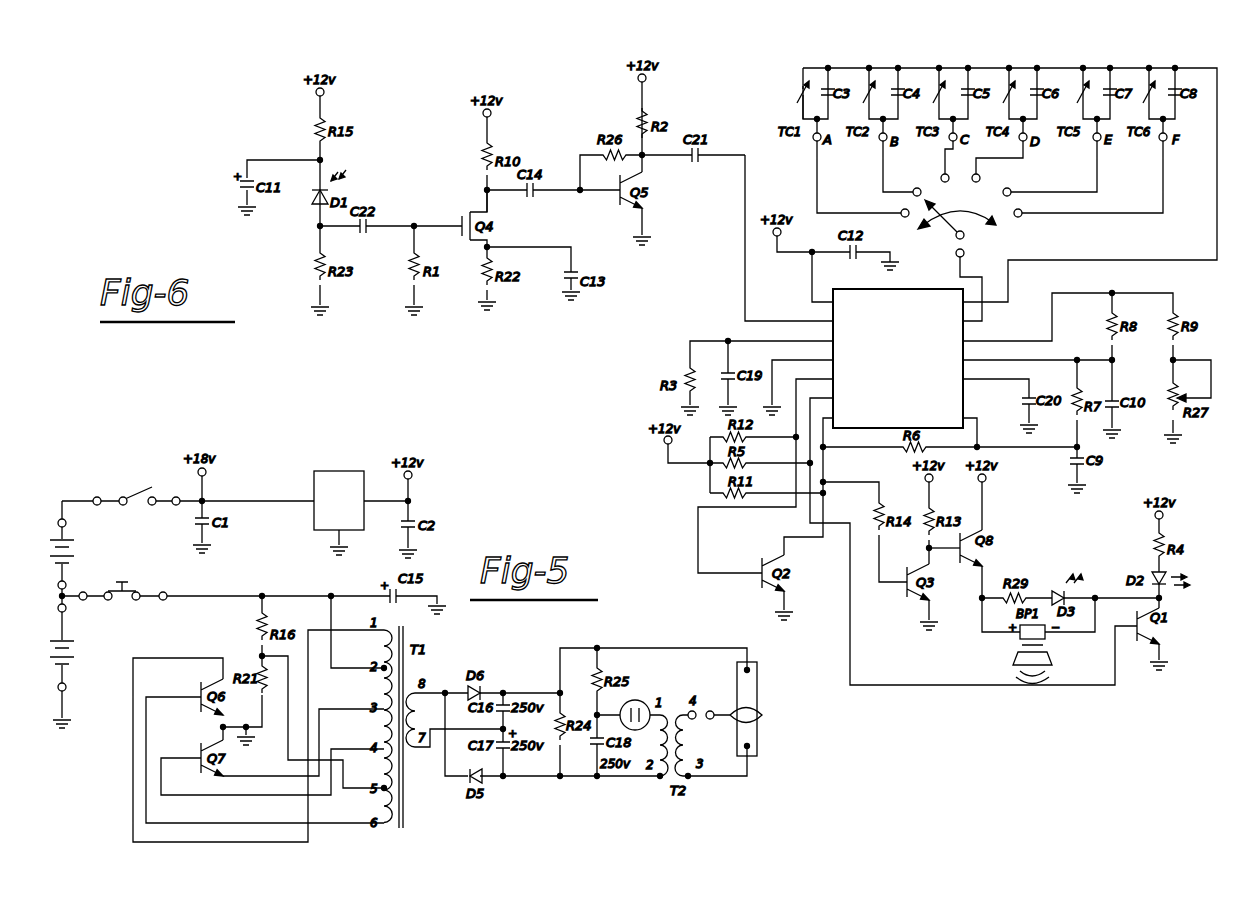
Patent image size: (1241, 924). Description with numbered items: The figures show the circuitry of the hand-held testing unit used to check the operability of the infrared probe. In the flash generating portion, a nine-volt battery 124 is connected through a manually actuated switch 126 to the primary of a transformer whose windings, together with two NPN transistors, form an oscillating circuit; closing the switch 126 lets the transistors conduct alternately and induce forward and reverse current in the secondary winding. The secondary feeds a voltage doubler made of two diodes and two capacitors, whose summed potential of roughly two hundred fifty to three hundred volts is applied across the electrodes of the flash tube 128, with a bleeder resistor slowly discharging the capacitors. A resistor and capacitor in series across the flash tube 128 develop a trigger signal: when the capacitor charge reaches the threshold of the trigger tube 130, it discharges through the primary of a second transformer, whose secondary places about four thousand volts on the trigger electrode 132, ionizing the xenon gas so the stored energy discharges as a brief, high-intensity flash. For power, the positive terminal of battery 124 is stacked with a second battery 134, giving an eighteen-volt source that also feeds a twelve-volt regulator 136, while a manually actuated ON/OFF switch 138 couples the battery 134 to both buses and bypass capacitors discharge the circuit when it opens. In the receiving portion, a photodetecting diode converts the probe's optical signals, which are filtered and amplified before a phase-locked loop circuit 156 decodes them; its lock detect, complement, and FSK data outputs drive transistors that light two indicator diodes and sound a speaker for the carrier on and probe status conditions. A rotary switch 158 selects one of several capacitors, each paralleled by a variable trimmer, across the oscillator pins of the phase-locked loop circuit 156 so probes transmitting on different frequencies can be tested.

The battery 124 is at (78, 651).
The manually actuated switch 126 is at (126, 583).
The flash tube 128 is at (757, 690).
The trigger tube 130 is at (636, 700).
The trigger electrode 132 is at (762, 716).
The battery 134 is at (75, 557).
The 12 v regulator 136 is at (345, 471).
The ON/OFF switch 138 is at (140, 490).
The phase-locked loop circuit 156 is at (914, 372).
The rotary switch 158 is at (966, 242).